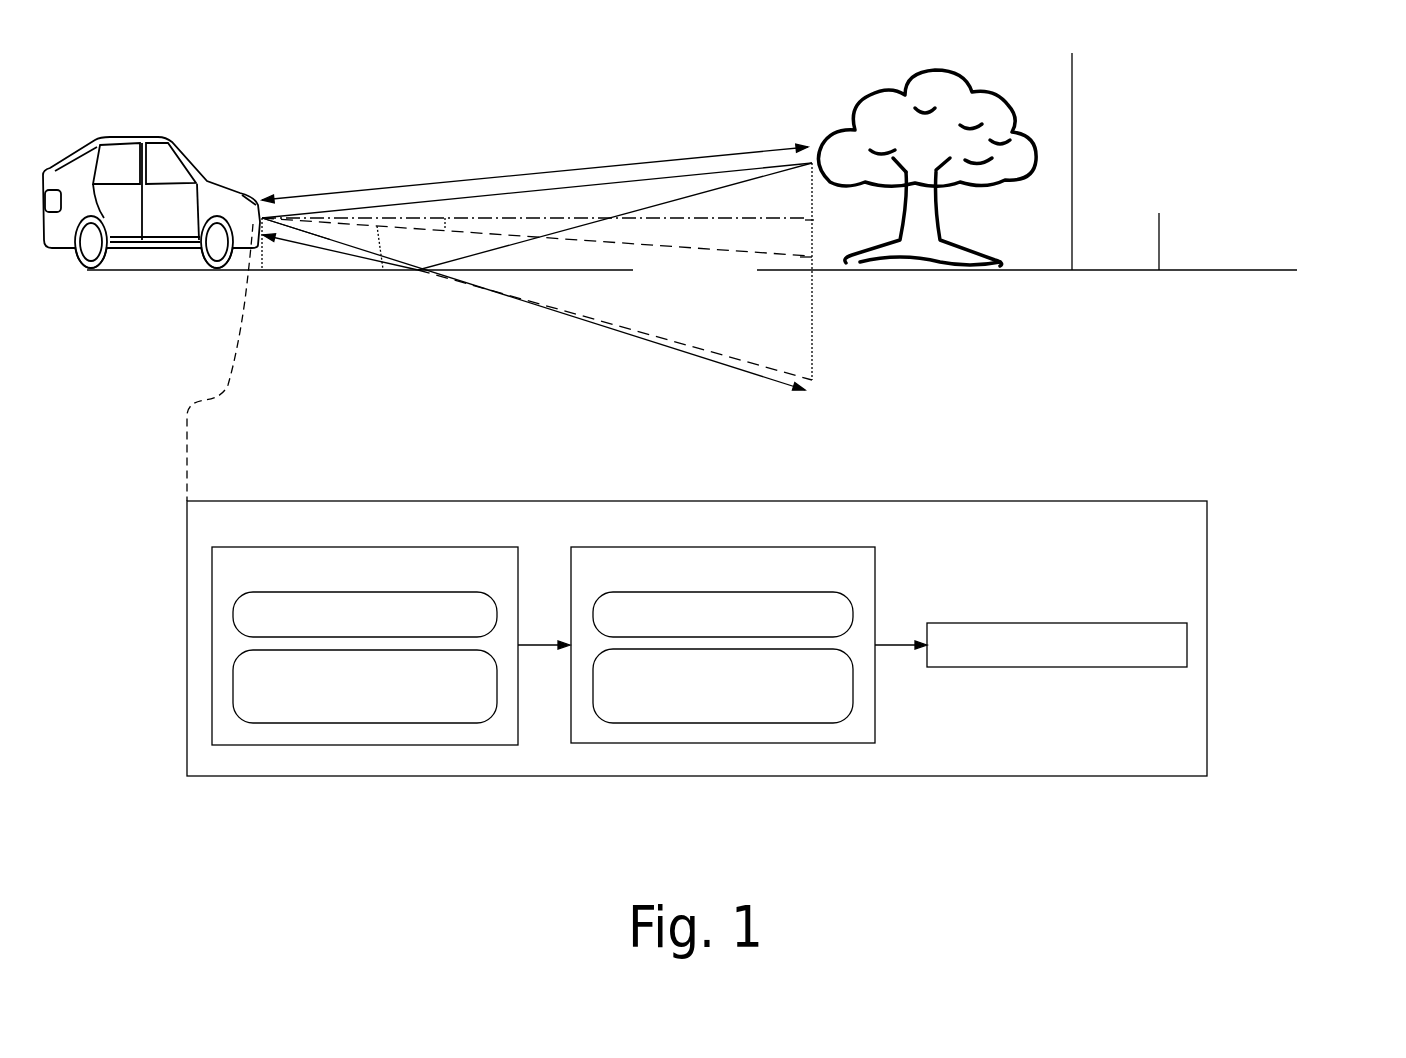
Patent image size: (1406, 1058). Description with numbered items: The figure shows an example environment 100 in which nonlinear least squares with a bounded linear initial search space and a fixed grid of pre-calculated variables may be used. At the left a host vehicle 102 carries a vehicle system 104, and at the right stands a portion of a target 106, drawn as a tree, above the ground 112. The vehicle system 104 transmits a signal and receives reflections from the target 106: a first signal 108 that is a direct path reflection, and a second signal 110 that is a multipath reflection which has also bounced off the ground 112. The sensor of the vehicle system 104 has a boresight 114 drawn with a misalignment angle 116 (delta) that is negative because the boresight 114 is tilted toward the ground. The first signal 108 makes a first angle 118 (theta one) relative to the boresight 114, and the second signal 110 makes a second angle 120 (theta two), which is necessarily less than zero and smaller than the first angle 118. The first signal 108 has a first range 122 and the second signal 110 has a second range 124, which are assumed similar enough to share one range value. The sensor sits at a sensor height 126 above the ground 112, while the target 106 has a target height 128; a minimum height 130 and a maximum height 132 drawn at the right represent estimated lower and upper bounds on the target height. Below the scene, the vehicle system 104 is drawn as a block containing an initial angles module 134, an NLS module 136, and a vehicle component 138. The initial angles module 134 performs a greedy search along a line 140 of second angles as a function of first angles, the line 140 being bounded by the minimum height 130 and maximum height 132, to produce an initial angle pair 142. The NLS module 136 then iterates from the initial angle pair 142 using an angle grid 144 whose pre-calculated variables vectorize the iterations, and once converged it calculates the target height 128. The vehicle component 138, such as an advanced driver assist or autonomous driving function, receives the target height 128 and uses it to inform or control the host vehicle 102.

The example environment 100 is at (1324, 82).
The host vehicle 102 is at (143, 170).
The vehicle system 104 is at (697, 500).
The target 106 is at (820, 152).
The first signal 108 is at (503, 196).
The second signal 110 is at (312, 235).
The ground 112 is at (692, 270).
The boresight 114 is at (808, 257).
The misalignment angle 116 is at (660, 244).
The first angle 118 is at (445, 218).
The second angle 120 is at (380, 250).
The first range 122 is at (583, 167).
The second range 124 is at (557, 316).
The sensor height 126 is at (263, 270).
The target height 128 is at (813, 232).
The minimum height 130 is at (1159, 255).
The maximum height 132 is at (1072, 143).
The initial angles module 134 is at (365, 646).
The NLS module 136 is at (723, 645).
The vehicle component 138 is at (1057, 645).
The line 140 is at (365, 614).
The initial angle pair 142 is at (365, 686).
The angle grid 144 is at (723, 614).